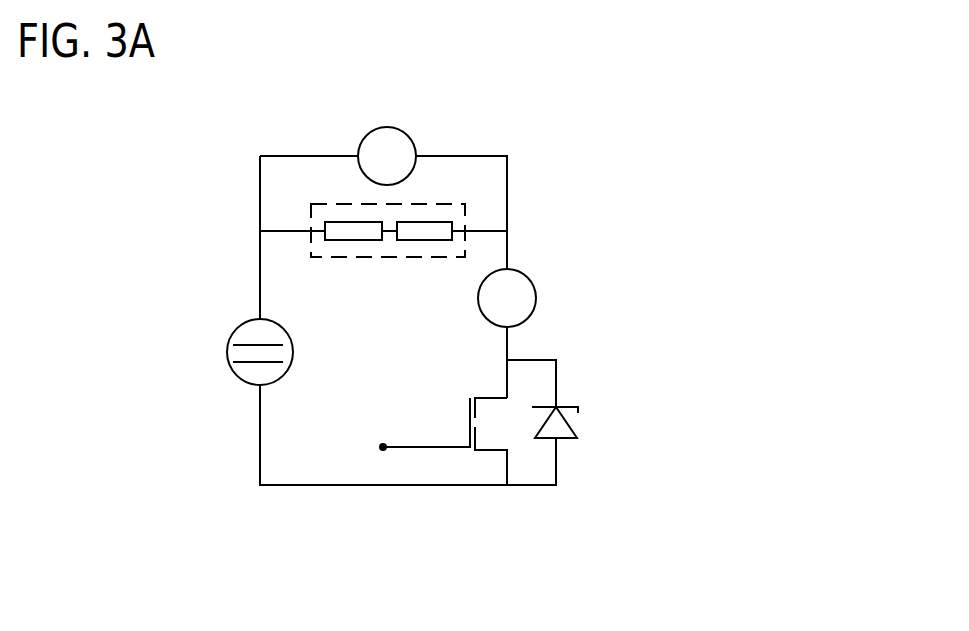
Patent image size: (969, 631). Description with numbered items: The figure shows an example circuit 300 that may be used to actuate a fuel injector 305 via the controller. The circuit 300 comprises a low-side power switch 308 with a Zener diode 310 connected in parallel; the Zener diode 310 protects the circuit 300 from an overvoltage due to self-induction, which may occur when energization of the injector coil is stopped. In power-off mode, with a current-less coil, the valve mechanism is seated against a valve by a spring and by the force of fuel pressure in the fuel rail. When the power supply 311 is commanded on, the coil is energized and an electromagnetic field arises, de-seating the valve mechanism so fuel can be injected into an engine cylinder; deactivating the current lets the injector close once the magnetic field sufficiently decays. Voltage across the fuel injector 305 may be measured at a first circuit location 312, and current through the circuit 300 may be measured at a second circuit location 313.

The circuit 300 is at (815, 104).
The fuel injector 305 is at (453, 203).
The low-side power switch 308 is at (462, 395).
The Zener diode 310 is at (583, 425).
The power supply 311 is at (227, 352).
The first circuit location 312 is at (409, 134).
The second circuit location 313 is at (530, 279).